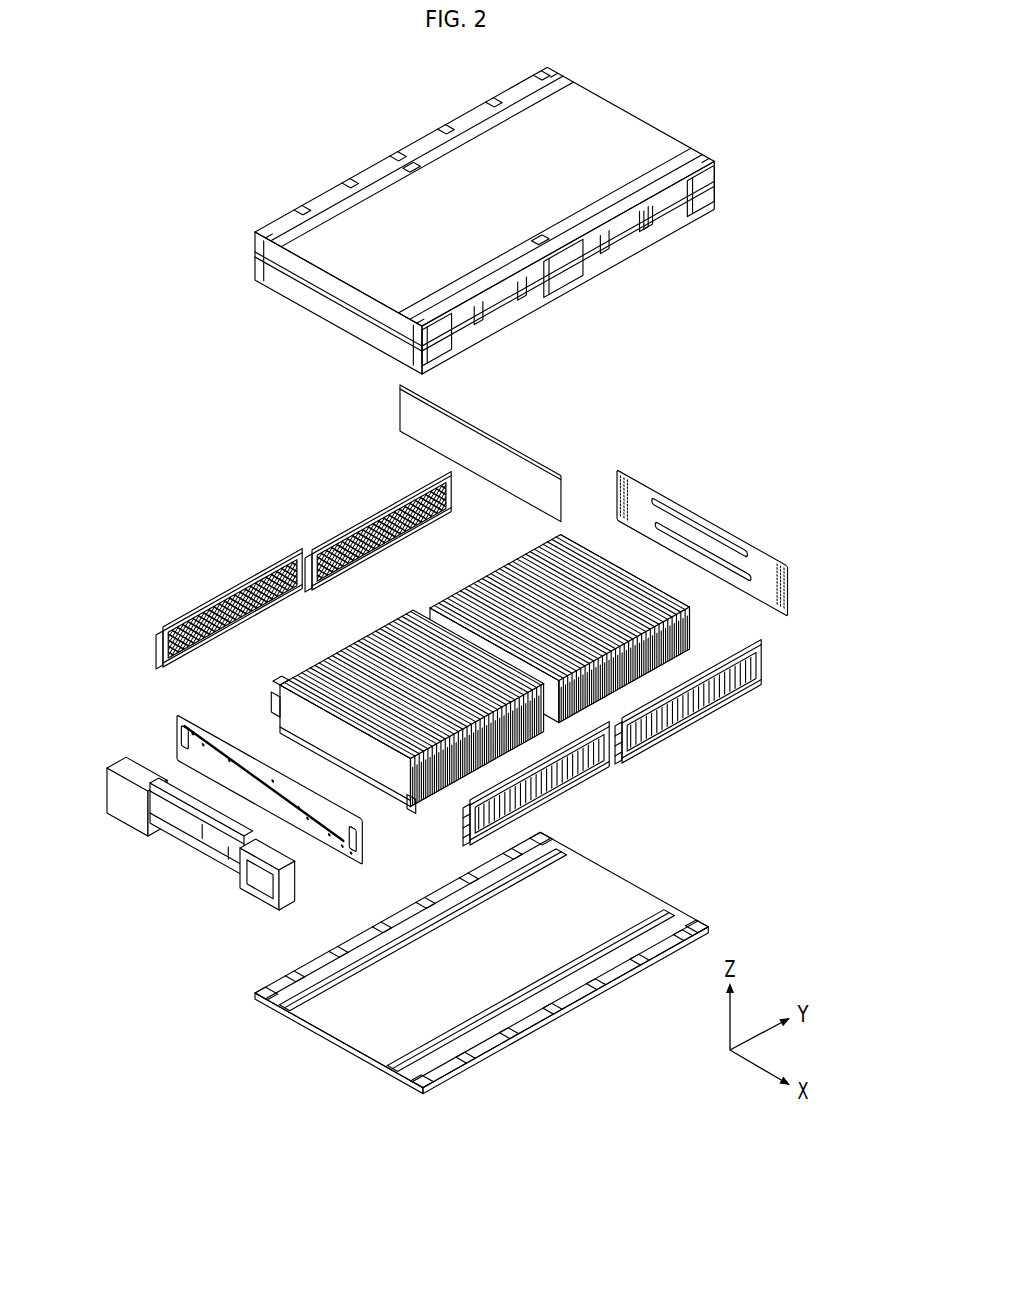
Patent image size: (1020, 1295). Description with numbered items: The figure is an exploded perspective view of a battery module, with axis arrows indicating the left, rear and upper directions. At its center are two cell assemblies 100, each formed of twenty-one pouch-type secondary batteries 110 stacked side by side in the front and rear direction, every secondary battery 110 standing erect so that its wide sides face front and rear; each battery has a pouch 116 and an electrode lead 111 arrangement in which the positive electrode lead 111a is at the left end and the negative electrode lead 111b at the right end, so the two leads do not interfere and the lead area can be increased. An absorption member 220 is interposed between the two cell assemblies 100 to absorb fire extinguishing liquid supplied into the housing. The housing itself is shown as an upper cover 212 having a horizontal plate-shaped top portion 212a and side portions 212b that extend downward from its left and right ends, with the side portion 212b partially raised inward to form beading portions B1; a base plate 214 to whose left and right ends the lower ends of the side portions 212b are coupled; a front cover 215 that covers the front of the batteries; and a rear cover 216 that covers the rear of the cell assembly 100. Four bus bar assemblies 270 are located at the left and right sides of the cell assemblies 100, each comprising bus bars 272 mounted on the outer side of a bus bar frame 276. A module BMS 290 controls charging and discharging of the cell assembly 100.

The upper cover 212 is at (491, 220).
The top portion 212a is at (508, 160).
The side portion 212b is at (378, 160).
The beading portion B1 is at (666, 206).
The absorption member 220 is at (490, 426).
The rear cover 216 is at (705, 510).
The cell assembly 100 is at (451, 679).
The secondary battery 110 is at (342, 747).
The electrode lead 111 is at (666, 1090).
The positive electrode lead 111a is at (272, 705).
The negative electrode lead 111b is at (420, 807).
The pouch 116 is at (279, 686).
The bus bar assembly 270 is at (483, 872).
The bus bar 272 is at (713, 713).
The bus bar frame 276 is at (700, 960).
The front cover 215 is at (166, 736).
The module BMS 290 is at (182, 857).
The base plate 214 is at (355, 927).